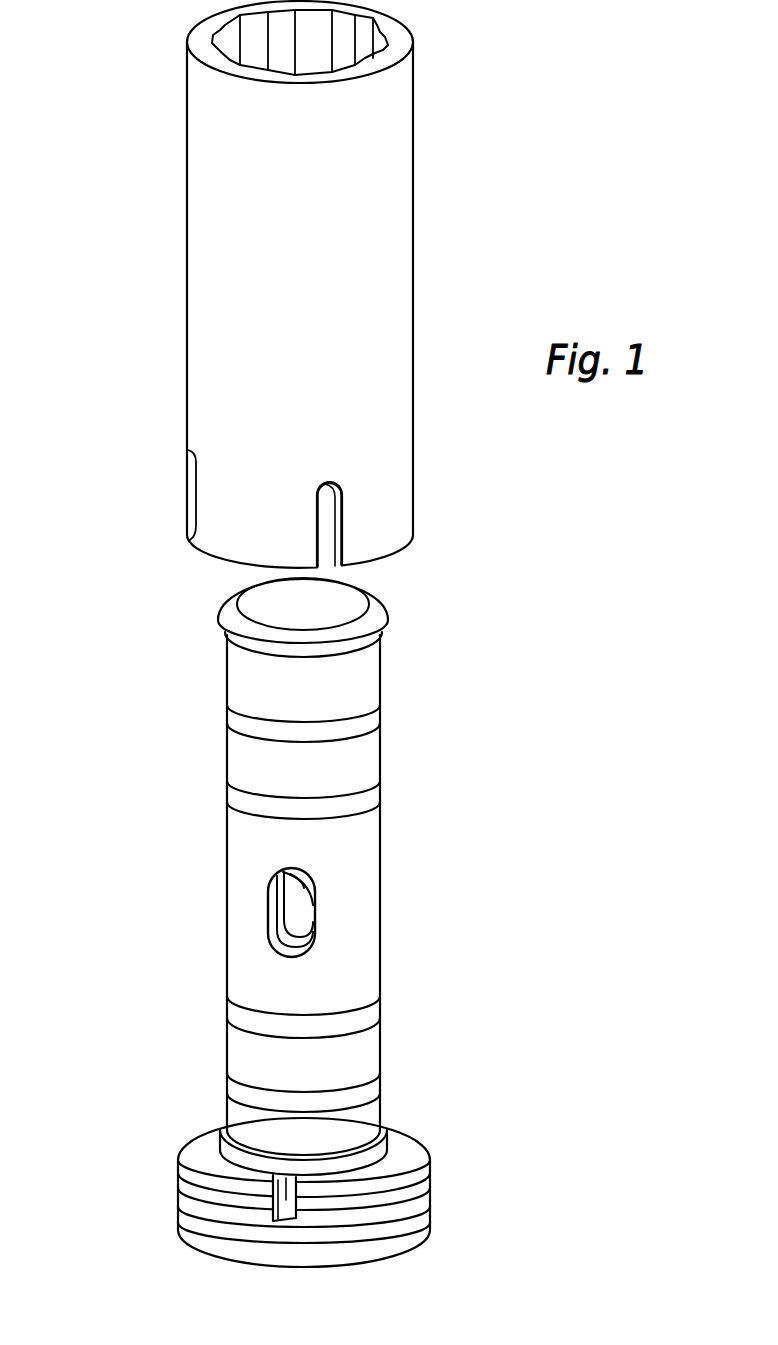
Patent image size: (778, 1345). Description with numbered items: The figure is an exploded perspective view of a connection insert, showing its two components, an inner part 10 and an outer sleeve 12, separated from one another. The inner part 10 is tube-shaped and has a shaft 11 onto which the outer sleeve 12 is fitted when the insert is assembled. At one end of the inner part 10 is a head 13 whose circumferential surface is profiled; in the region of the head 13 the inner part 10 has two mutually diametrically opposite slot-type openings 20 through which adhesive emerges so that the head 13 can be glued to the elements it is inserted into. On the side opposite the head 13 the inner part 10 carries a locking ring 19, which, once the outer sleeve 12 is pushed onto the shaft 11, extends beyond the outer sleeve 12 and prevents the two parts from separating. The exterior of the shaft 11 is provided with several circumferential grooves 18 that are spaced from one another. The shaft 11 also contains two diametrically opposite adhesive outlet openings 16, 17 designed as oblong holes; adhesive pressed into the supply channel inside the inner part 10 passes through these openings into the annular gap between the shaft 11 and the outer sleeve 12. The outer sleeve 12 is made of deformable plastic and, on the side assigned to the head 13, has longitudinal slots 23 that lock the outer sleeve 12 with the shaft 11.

The inner part 10 is at (294, 902).
The shaft 11 is at (298, 847).
The outer sleeve 12 is at (428, 257).
The head 13 is at (180, 1230).
The adhesive outlet opening 16 is at (270, 900).
The adhesive outlet opening 17 is at (304, 886).
The circumferential grooves 18 is at (227, 782).
The locking ring 19 is at (374, 619).
The slot-type openings 20 is at (300, 1163).
The slots 23 is at (318, 520).